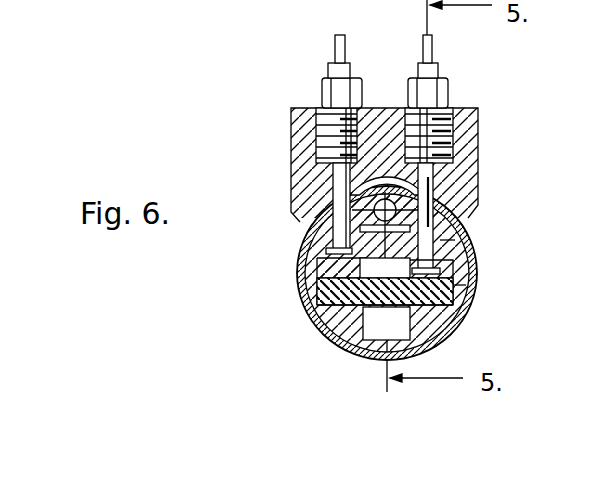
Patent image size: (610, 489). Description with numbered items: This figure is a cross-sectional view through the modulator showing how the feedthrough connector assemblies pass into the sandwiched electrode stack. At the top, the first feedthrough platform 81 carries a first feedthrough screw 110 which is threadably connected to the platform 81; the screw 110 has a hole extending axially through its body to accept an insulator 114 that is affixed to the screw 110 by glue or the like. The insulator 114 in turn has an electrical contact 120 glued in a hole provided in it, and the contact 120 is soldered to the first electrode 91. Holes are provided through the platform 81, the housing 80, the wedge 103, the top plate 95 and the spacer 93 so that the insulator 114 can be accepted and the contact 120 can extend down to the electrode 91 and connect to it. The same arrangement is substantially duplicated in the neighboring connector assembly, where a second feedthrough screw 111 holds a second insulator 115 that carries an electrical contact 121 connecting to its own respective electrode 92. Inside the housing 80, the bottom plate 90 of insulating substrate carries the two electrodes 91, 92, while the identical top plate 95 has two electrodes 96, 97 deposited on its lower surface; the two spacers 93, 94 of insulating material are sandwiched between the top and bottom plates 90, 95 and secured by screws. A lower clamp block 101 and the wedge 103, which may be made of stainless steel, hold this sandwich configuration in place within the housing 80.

The housing 80 is at (318, 325).
The first feedthrough platform 81 is at (470, 170).
The bottom plate 90 is at (312, 300).
The first electrode 91 is at (472, 288).
The electrode 92 is at (330, 288).
The spacer 93 is at (458, 267).
The spacer 94 is at (320, 268).
The top plate 95 is at (440, 243).
The electrode 96 is at (455, 258).
The electrode 97 is at (355, 258).
The lower clamp block 101 is at (352, 338).
The wedge 103 is at (372, 206).
The first feedthrough screw 110 is at (448, 106).
The left fitting 111 is at (325, 110).
The insulator 114 is at (440, 196).
The insulator 115 is at (333, 183).
The electrical contact 120 is at (432, 54).
The electrical contact 121 is at (336, 50).